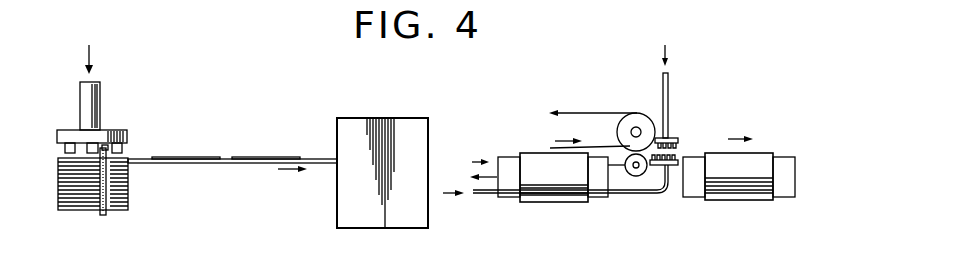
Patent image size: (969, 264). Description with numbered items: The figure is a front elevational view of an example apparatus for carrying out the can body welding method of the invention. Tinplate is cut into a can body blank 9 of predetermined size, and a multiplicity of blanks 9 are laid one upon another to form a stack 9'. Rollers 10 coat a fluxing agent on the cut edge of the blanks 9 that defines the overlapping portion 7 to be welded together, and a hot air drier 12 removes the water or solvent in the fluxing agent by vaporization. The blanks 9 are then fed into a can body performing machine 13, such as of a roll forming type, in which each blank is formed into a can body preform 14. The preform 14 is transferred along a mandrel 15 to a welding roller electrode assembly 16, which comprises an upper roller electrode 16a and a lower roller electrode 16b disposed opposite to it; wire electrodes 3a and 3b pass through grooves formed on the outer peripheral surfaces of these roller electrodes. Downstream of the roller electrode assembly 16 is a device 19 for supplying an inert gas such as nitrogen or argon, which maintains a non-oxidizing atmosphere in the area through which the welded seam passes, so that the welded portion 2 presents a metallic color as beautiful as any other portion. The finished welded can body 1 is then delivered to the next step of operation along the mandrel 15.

The welded can body 1 is at (740, 186).
The welded portion 2 is at (760, 153).
The wire electrode 3a is at (578, 113).
The wire electrode 3b is at (497, 158).
The overlapping portion 7 is at (537, 153).
The can body blank 9 is at (231, 149).
The stack 9' is at (93, 203).
The rollers 10 is at (106, 200).
The hot air drier 12 is at (100, 101).
The can body performing machine 13 is at (380, 118).
The can body preform 14 is at (555, 200).
The mandrel 15 is at (500, 197).
The welding roller electrode assembly 16 is at (616, 143).
The upper roller electrode 16a is at (638, 124).
The lower roller electrode 16b is at (640, 176).
The device for supplying an inert gas 19 is at (676, 152).